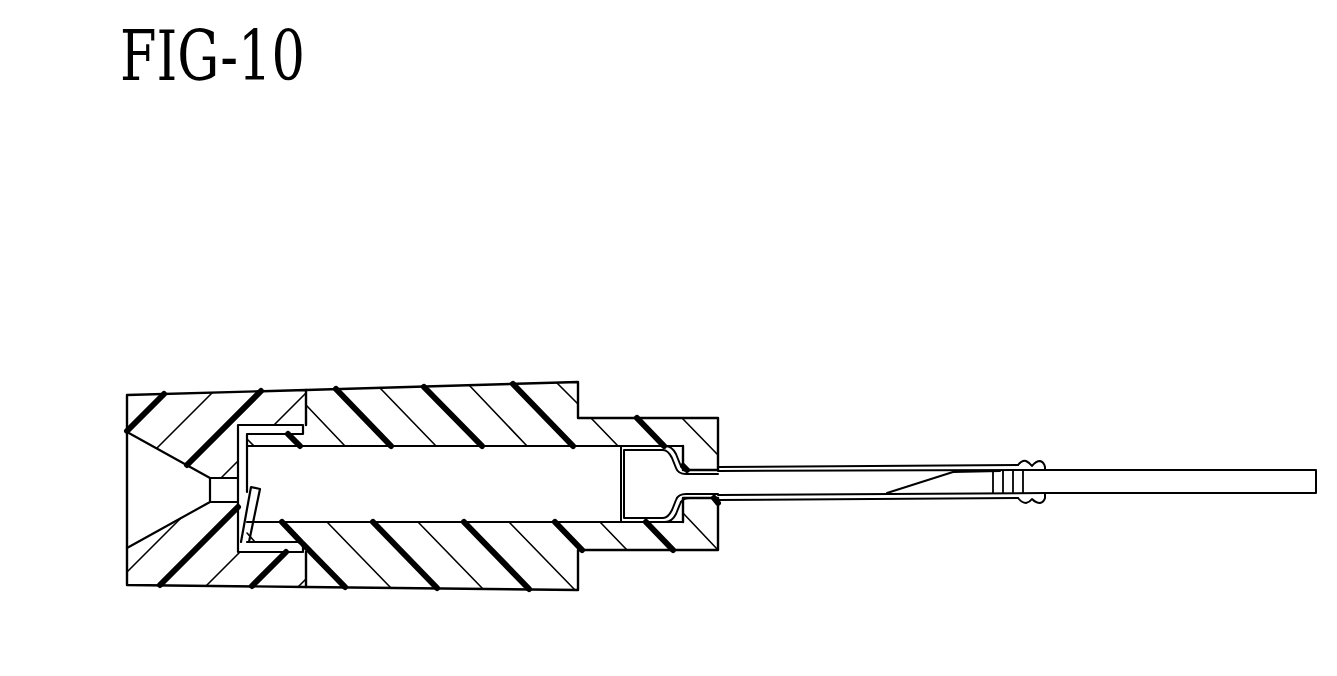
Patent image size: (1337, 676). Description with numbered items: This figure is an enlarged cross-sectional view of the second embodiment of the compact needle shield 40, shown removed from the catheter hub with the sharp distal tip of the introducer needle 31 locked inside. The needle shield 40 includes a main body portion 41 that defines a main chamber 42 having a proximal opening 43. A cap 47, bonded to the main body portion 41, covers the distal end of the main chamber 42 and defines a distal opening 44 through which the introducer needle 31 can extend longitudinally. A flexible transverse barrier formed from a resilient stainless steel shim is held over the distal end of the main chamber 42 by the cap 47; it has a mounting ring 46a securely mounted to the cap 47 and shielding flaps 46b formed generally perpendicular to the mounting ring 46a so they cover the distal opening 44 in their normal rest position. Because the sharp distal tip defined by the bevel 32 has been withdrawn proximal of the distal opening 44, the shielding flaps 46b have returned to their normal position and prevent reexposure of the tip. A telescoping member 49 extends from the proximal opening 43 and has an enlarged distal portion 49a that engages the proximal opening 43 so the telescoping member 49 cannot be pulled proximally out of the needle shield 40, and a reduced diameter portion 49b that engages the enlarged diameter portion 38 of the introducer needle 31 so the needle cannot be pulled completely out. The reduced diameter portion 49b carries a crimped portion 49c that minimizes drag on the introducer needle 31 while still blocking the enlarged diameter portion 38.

The introducer needle 31 is at (1262, 421).
The bevel 32 is at (889, 494).
The enlarged diameter portion 38 is at (1013, 478).
The needle shield 40 is at (498, 383).
The main body portion 41 is at (541, 574).
The main chamber 42 is at (589, 503).
The proximal opening 43 is at (720, 463).
The distal opening 44 is at (232, 490).
The mounting ring 46a is at (291, 550).
The shielding flaps 46b is at (306, 432).
The cap 47 is at (153, 572).
The telescoping member 49 is at (871, 467).
The enlarged distal portion 49a is at (670, 443).
The reduced diameter portion 49b is at (1038, 466).
The crimped portion 49c is at (1028, 498).